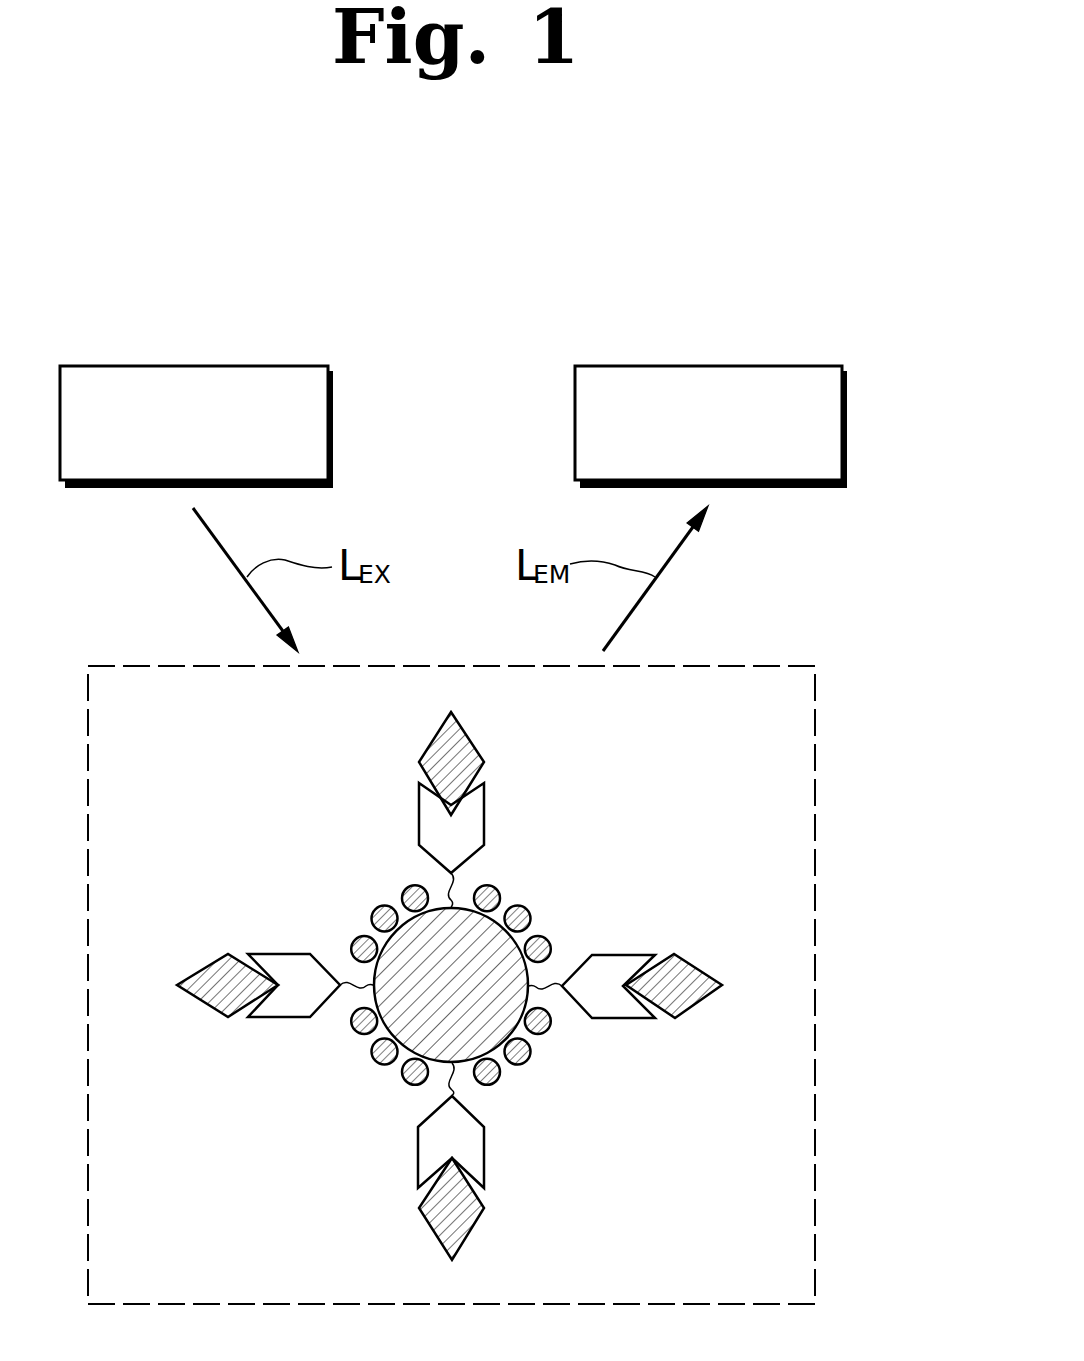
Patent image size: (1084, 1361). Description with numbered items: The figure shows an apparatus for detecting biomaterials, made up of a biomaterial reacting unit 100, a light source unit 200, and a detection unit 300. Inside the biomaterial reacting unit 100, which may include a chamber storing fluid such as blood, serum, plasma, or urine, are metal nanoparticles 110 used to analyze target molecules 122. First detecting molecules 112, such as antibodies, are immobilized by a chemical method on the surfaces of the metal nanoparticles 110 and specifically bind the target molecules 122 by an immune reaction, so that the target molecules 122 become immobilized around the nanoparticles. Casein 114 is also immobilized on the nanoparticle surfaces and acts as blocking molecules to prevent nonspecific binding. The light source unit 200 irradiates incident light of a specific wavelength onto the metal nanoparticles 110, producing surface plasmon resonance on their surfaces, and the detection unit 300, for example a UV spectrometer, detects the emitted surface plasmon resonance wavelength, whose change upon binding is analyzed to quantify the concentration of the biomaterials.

The biomaterial reacting unit 100 is at (816, 870).
The metal nanoparticles 110 is at (500, 1025).
The first detecting molecules 112 is at (472, 820).
The casein 114 is at (527, 909).
The target molecules 122 is at (700, 995).
The light source unit 200 is at (252, 366).
The detection unit 300 is at (767, 366).